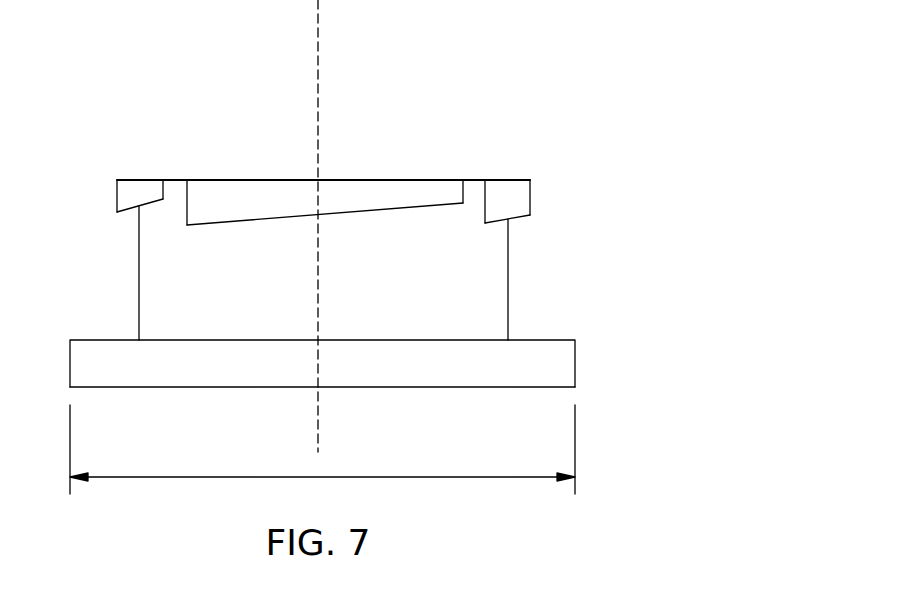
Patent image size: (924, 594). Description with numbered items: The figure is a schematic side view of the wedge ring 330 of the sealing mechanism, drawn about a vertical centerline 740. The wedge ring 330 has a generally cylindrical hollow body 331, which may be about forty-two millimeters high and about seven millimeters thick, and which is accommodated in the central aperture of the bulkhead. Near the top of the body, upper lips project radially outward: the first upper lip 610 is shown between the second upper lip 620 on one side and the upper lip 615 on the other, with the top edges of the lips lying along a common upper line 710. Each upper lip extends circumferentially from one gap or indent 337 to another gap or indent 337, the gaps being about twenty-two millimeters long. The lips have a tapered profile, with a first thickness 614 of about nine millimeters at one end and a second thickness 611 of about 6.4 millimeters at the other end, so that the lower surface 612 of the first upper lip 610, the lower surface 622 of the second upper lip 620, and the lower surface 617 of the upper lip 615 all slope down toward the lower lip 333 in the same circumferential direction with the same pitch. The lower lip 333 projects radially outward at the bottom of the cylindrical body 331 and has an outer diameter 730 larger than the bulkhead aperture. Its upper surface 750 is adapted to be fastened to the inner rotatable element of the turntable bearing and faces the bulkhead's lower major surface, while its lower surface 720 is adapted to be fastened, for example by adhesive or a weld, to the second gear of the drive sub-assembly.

The wedge ring 330 is at (550, 82).
The central axis 740 is at (318, 60).
The top plate 710 is at (368, 178).
The first upper lip 610 is at (325, 159).
The first thickness 614 is at (188, 190).
The second thickness 611 is at (463, 190).
The lower surface 612 is at (243, 220).
The second upper lip 620 is at (102, 185).
The lower surface 622 is at (125, 212).
The fourth upper lip 615 is at (544, 185).
The lower surface 617 is at (517, 218).
The gap or indent 337 is at (175, 192).
The cylindrical hollow body 331 is at (133, 245).
The lower lip 333 is at (547, 352).
The upper surface 750 is at (101, 352).
The lower surface 720 is at (427, 387).
The outer diameter 730 is at (322, 449).